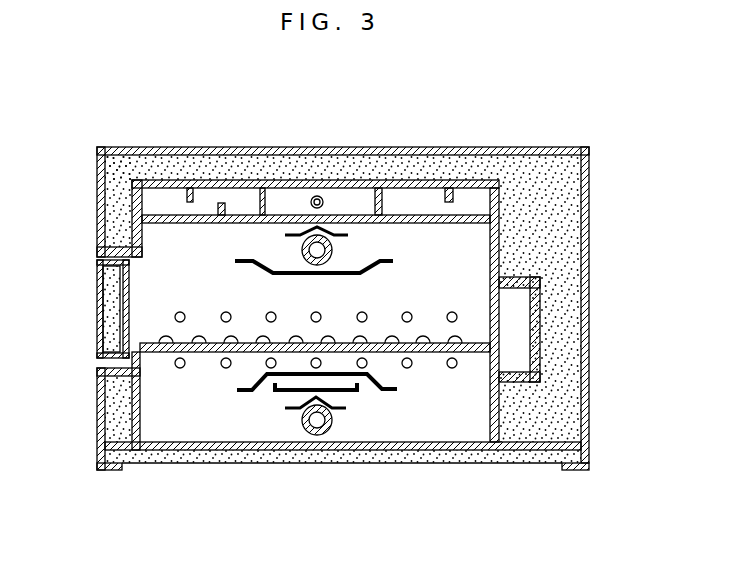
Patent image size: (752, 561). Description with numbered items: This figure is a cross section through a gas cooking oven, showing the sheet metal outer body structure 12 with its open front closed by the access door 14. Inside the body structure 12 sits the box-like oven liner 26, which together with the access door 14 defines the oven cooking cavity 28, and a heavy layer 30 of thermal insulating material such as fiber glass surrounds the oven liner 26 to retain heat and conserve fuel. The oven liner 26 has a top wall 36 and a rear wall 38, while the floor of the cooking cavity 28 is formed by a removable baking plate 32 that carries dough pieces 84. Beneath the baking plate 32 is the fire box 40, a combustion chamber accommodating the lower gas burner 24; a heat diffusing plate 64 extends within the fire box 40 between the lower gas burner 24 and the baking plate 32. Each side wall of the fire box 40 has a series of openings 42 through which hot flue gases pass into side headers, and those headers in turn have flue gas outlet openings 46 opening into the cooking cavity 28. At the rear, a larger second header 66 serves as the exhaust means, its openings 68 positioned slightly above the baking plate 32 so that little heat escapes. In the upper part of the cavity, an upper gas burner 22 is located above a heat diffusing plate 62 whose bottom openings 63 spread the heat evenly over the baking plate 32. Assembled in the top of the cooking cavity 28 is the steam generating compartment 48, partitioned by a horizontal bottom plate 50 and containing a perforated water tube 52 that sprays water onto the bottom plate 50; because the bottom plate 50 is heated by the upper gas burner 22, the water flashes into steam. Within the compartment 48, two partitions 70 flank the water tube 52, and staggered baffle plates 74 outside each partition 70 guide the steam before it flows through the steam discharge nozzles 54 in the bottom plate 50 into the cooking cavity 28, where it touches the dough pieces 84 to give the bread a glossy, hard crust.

The outer cabinet or body structure 12 is at (128, 147).
The access door 14 is at (98, 308).
The upper gas burner 22 is at (333, 252).
The lower gas burner 24 is at (332, 430).
The oven liner 26 is at (498, 258).
The oven cooking cavity 28 is at (266, 298).
The layer of thermal insulating material 30 is at (560, 190).
The baking plate 32 is at (204, 353).
The top wall 36 is at (415, 182).
The rear wall 38 is at (500, 235).
The fire box 40 is at (413, 413).
The openings 42 is at (452, 370).
The flue gas outlet openings 46 is at (224, 308).
The steam generating compartment 48 is at (137, 190).
The bottom plate 50 is at (197, 223).
The water tube 52 is at (318, 196).
The steam discharge nozzles 54 is at (175, 215).
The heat diffusing plate 62 is at (233, 253).
The openings 63 is at (303, 277).
The heat diffusing plate 64 is at (243, 393).
The second header 66 is at (502, 322).
The openings 68 is at (540, 338).
The partitions 70 is at (262, 188).
The baffle plates 74 is at (222, 204).
The dough pieces 84 is at (173, 352).